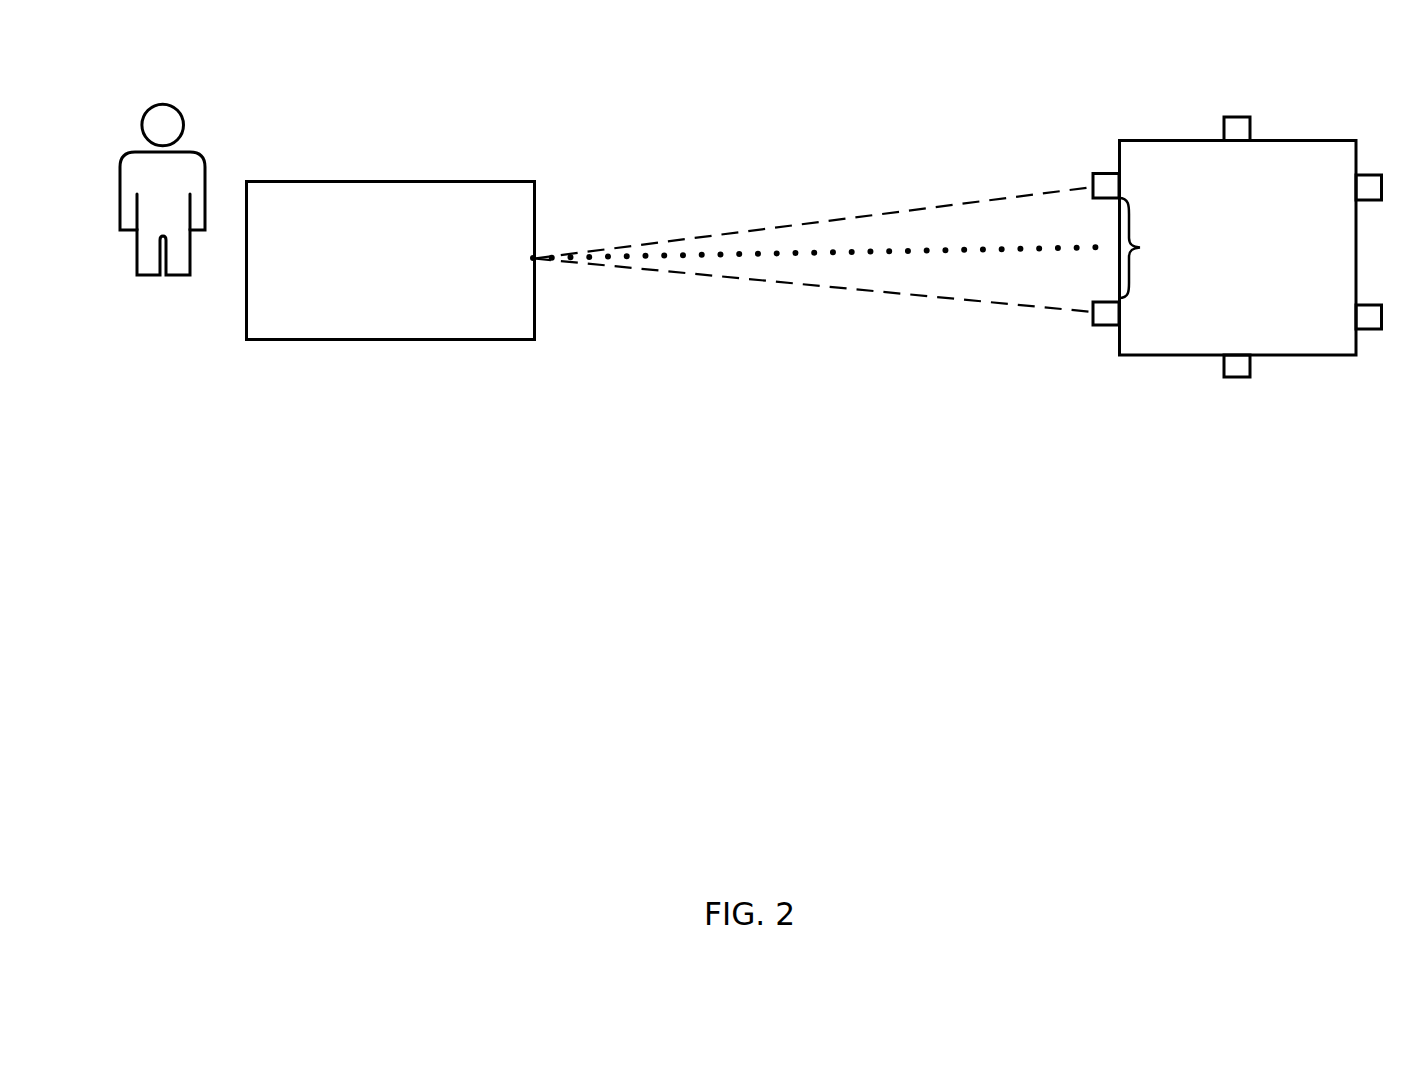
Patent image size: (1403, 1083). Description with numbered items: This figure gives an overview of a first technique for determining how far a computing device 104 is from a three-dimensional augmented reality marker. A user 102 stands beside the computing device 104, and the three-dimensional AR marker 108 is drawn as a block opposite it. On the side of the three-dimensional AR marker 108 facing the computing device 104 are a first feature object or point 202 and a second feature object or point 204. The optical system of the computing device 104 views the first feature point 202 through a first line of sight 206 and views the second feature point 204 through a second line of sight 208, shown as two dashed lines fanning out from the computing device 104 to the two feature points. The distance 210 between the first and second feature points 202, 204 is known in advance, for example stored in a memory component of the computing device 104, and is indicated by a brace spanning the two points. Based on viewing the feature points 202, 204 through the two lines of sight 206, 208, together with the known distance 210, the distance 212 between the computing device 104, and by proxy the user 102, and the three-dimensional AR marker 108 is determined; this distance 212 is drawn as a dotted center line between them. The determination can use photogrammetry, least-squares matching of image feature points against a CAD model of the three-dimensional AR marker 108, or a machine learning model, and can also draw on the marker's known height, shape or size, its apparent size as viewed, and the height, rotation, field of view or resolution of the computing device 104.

The user 102 is at (190, 152).
The computing device 104 is at (366, 306).
The 3D AR marker 108 is at (1214, 294).
The first feature object or point 202 is at (1104, 175).
The second feature object or point 204 is at (1106, 325).
The first line of sight 206 is at (842, 218).
The second line of sight 208 is at (840, 290).
The distance between the first and second feature points 210 is at (1141, 247).
The distance between the computing device and the 3D AR marker 212 is at (985, 250).